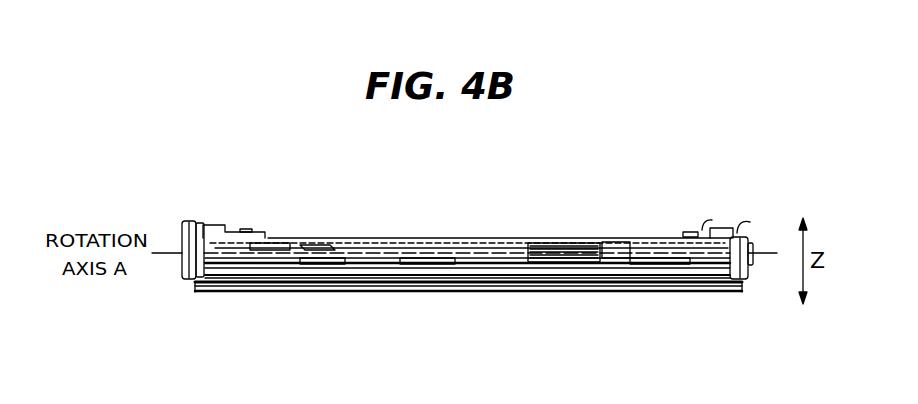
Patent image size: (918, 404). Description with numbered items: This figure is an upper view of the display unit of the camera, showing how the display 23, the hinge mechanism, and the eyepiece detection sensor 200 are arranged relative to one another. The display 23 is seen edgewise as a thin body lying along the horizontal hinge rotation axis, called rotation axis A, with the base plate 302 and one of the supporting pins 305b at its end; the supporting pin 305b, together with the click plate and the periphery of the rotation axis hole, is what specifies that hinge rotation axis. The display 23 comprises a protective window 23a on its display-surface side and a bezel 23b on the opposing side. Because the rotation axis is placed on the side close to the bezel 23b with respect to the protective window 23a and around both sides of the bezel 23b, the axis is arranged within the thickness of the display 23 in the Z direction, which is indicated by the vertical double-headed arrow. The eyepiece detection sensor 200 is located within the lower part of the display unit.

The display 23 is at (522, 218).
The protective window 23a is at (247, 292).
The bezel 23b is at (313, 270).
The eyepiece detection sensor 200 is at (440, 272).
The base plate 302 is at (181, 246).
The supporting pin 305b is at (200, 238).